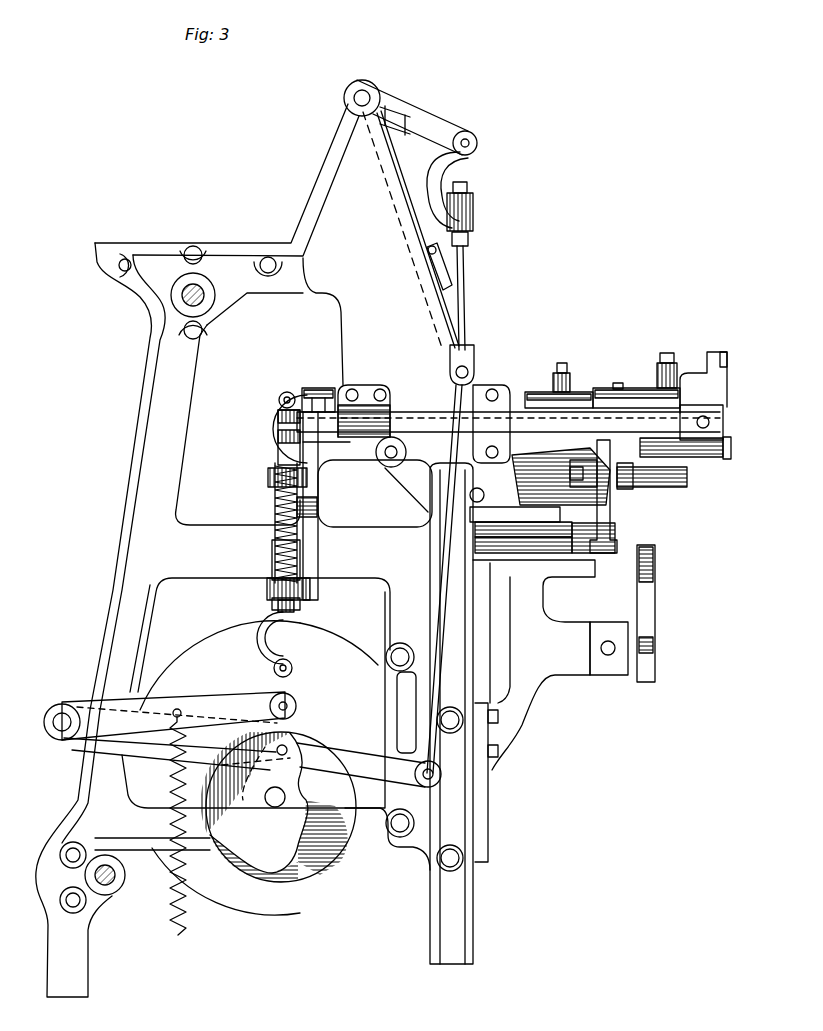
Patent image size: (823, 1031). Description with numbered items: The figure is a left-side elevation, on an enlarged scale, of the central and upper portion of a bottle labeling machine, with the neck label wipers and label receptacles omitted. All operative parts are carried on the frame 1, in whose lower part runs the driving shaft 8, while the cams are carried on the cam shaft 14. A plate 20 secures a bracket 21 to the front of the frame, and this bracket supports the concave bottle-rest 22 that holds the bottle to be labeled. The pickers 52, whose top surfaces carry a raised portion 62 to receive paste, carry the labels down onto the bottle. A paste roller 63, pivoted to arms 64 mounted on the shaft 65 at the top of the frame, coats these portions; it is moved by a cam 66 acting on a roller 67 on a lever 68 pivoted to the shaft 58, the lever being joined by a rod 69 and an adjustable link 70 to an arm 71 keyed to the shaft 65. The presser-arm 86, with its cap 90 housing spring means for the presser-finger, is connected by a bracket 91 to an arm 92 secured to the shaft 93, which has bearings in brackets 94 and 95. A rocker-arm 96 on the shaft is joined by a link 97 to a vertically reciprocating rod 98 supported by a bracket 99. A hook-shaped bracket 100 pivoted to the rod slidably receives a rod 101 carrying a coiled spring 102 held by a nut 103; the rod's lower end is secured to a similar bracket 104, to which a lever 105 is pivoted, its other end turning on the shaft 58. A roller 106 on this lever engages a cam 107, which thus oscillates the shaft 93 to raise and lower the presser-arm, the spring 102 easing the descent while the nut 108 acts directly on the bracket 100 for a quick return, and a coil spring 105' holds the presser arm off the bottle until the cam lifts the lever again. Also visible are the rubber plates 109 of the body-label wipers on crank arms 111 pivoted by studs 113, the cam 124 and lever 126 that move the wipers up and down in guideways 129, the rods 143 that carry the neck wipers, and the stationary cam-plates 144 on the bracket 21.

The frame 1 is at (142, 382).
The shaft 8 is at (118, 877).
The cam shaft 14 is at (275, 806).
The plate 20 is at (478, 806).
The bracket 21 is at (550, 665).
The bottle-rest 22 is at (632, 470).
The pickers 52 is at (512, 470).
The shaft 58 is at (62, 728).
The raised portion 62 is at (724, 444).
The paste roller 63 is at (478, 356).
The arms 64 is at (458, 230).
The shaft 65 is at (367, 93).
The cam 66 is at (337, 845).
The roller 67 is at (291, 762).
The lever 68 is at (346, 745).
The rod 69 is at (437, 570).
The link 70 is at (457, 176).
The arm 71 is at (437, 122).
The presser-arm 86 is at (633, 396).
The cap 90 is at (572, 385).
The bracket 91 is at (683, 376).
The arm 92 is at (718, 391).
The shaft 93 is at (418, 416).
The bracket 94 is at (632, 425).
The bracket 95 is at (363, 410).
The rocker-arm 96 is at (332, 392).
The link 97 is at (312, 458).
The rod 98 is at (279, 420).
The bracket 99 is at (270, 479).
The hook-shaped bracket 100 is at (270, 425).
The rod 101 is at (276, 491).
The coiled spring 102 is at (276, 548).
The nut 103 is at (272, 586).
The hook shaped bracket 104 is at (270, 630).
The lever 105 is at (173, 703).
The coil spring 105' is at (160, 822).
The roller 106 is at (299, 703).
The cam 107 is at (233, 842).
The nut 108 is at (284, 437).
The rubber plates 109 is at (531, 398).
The crank arms 111 is at (603, 508).
The studs 113 is at (500, 547).
The cam 124 is at (213, 662).
The lever 126 is at (345, 627).
The guideways 129 is at (404, 655).
The rods 143 is at (690, 472).
The cam-plates 144 is at (652, 606).